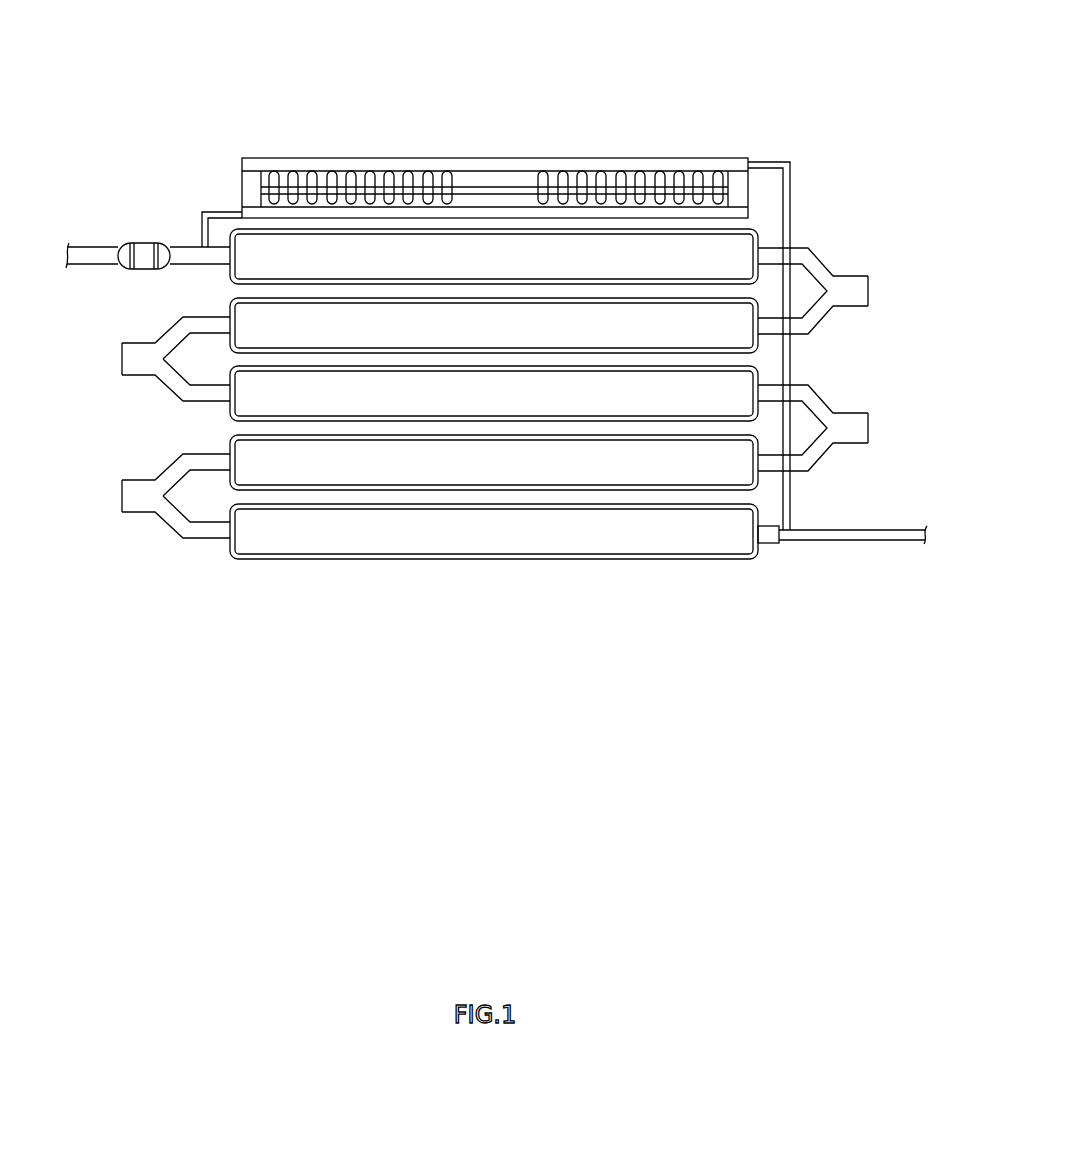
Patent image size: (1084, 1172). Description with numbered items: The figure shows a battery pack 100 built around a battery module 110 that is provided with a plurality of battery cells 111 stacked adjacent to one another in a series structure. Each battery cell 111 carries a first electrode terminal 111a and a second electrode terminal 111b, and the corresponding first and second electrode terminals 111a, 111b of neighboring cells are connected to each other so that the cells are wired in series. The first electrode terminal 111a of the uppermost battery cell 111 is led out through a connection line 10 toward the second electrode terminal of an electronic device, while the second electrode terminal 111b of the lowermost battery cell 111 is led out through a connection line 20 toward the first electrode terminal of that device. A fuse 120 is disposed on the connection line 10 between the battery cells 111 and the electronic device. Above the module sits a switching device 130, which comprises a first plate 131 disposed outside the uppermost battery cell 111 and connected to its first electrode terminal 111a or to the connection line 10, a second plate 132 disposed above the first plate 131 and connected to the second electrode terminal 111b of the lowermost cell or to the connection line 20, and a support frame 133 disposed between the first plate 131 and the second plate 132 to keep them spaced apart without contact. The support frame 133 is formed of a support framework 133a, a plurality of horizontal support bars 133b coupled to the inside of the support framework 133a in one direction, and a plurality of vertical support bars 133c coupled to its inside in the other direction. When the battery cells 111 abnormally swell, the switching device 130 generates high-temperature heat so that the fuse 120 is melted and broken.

The battery pack 100 is at (690, 96).
The connection line 10 is at (84, 250).
The connection line 20 is at (870, 541).
The battery module 110 is at (340, 637).
The battery cell 111 is at (340, 258).
The first electrode terminal 111a is at (183, 264).
The second electrode terminal 111b is at (852, 277).
The fuse 120 is at (144, 247).
The switching device 130 is at (503, 92).
The first plate 131 is at (496, 215).
The second plate 132 is at (428, 165).
The support frame 133 is at (253, 110).
The support framework 133a is at (250, 171).
The horizontal support bars 133b is at (310, 171).
The vertical support bars 133c is at (368, 171).